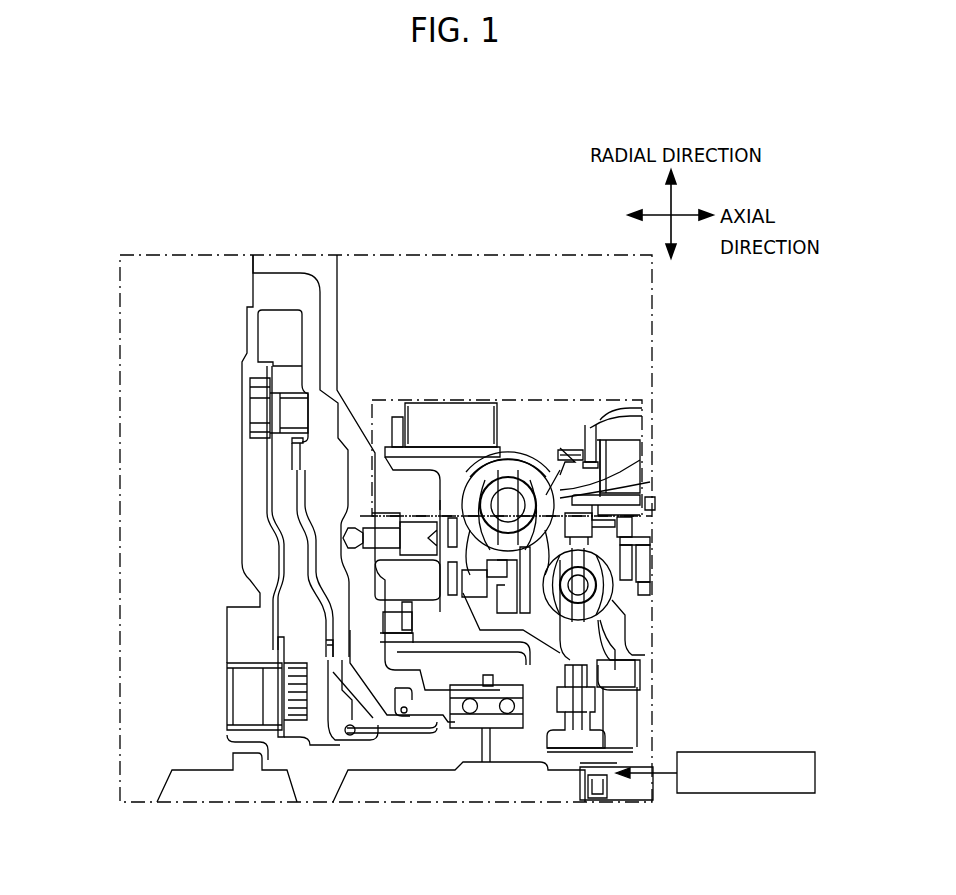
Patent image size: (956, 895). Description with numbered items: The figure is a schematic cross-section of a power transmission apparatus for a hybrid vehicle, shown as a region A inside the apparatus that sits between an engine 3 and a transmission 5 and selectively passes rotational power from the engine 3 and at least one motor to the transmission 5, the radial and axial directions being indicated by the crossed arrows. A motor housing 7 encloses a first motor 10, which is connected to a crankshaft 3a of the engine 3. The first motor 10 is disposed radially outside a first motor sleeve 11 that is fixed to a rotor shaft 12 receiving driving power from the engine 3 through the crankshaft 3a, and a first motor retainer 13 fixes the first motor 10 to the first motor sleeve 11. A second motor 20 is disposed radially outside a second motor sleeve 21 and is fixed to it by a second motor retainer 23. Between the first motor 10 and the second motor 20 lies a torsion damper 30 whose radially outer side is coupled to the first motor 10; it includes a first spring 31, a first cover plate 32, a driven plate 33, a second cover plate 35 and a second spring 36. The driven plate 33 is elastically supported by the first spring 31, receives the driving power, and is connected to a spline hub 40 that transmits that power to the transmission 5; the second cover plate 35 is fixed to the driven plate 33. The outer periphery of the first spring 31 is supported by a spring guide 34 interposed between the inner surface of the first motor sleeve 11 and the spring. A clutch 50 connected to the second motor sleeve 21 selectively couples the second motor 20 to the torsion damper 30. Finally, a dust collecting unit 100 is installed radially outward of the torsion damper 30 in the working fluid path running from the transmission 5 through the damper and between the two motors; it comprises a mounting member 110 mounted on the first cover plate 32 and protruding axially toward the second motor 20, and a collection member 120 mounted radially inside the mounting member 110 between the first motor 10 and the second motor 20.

The engine 3 is at (125, 330).
The crankshaft 3a is at (248, 742).
The transmission 5 is at (697, 793).
The motor housing 7 is at (317, 268).
The first motor 10 is at (478, 418).
The first motor sleeve 11 is at (437, 452).
The rotor shaft 12 is at (382, 762).
The first motor retainer 13 is at (396, 417).
The second motor 20 is at (617, 447).
The second motor sleeve 21 is at (638, 497).
The second motor retainer 23 is at (618, 412).
The torsion damper 30 is at (556, 527).
The first spring 31 is at (640, 484).
The first cover plate 32 is at (575, 488).
The driven plate 33 is at (473, 477).
The spring guide 34 is at (565, 662).
The second cover plate 35 is at (627, 695).
The second spring 36 is at (608, 590).
The spline hub 40 is at (603, 738).
The clutch 50 is at (645, 576).
The dust collecting unit 100 is at (576, 446).
The mounting member 110 is at (592, 440).
The collection member 120 is at (548, 430).
The resolver region A is at (376, 398).